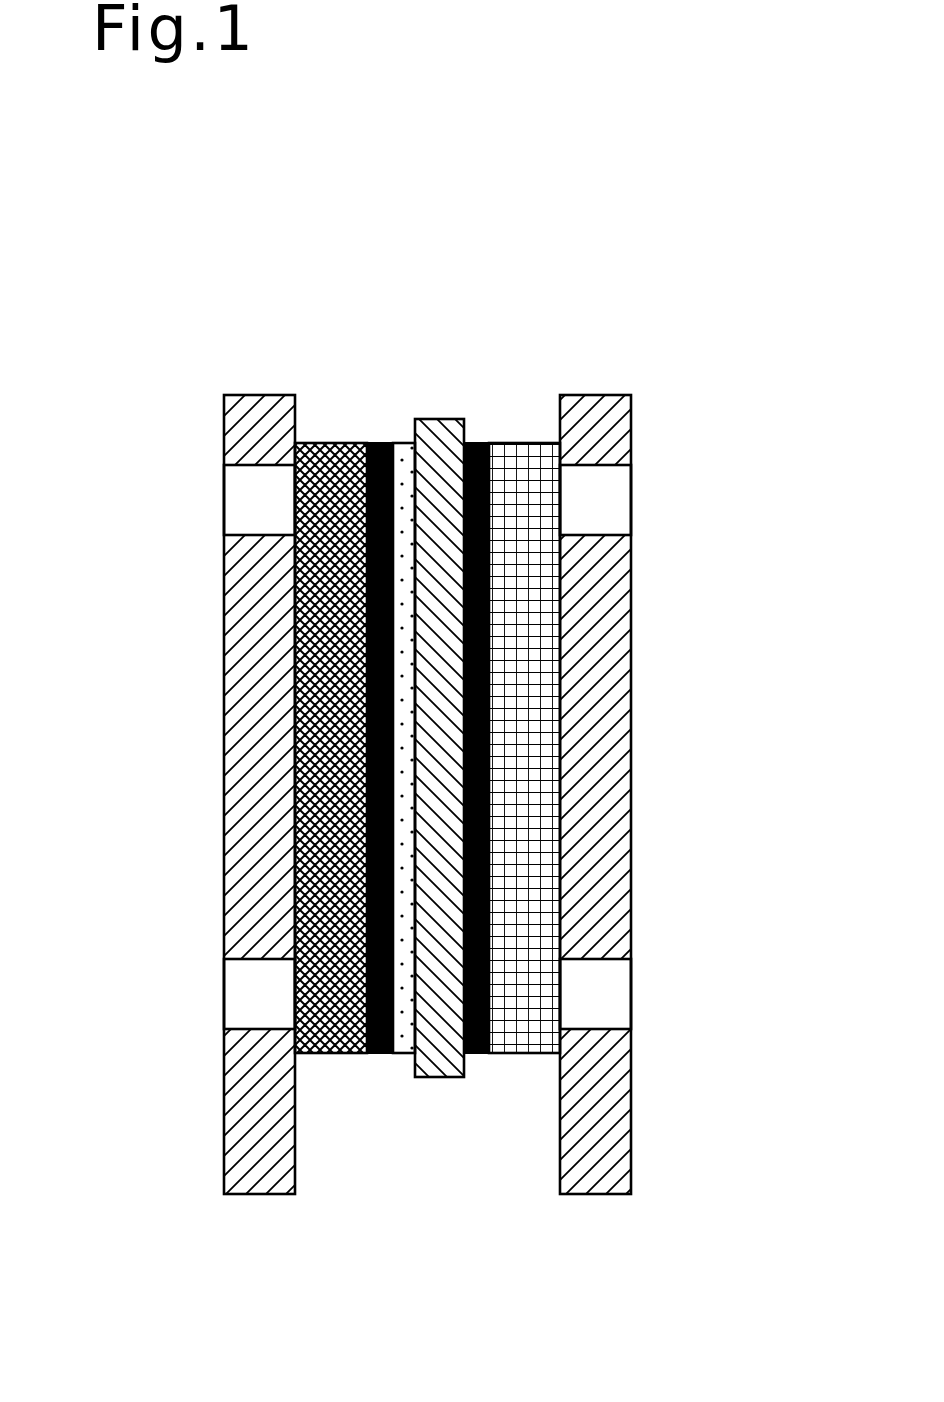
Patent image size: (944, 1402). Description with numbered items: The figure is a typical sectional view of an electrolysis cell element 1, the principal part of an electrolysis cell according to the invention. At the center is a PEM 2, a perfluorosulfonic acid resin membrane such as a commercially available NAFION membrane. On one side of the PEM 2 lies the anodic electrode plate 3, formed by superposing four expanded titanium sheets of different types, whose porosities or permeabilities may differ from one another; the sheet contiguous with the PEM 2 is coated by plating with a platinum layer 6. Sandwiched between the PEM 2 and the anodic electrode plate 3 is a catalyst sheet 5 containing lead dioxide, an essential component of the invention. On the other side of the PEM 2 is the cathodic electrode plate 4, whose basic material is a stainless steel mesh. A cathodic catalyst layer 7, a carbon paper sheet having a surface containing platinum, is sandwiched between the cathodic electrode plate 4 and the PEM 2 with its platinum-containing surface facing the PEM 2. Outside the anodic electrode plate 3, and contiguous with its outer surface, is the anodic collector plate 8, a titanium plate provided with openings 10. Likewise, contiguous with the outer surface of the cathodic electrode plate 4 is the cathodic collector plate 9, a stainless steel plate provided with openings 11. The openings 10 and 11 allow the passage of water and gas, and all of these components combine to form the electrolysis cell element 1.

The electrolysis cell element 1 is at (157, 190).
The PEM 2 is at (440, 419).
The anodic electrode plate 3 is at (331, 443).
The cathodic electrode plate 4 is at (522, 443).
The catalyst sheet 5 is at (404, 1053).
The platinum layer 6 is at (382, 1053).
The cathodic catalyst layer 7 is at (477, 1053).
The anodic collector plate 8 is at (233, 657).
The cathodic collector plate 9 is at (622, 640).
The openings 10 is at (255, 1000).
The openings 11 is at (622, 508).